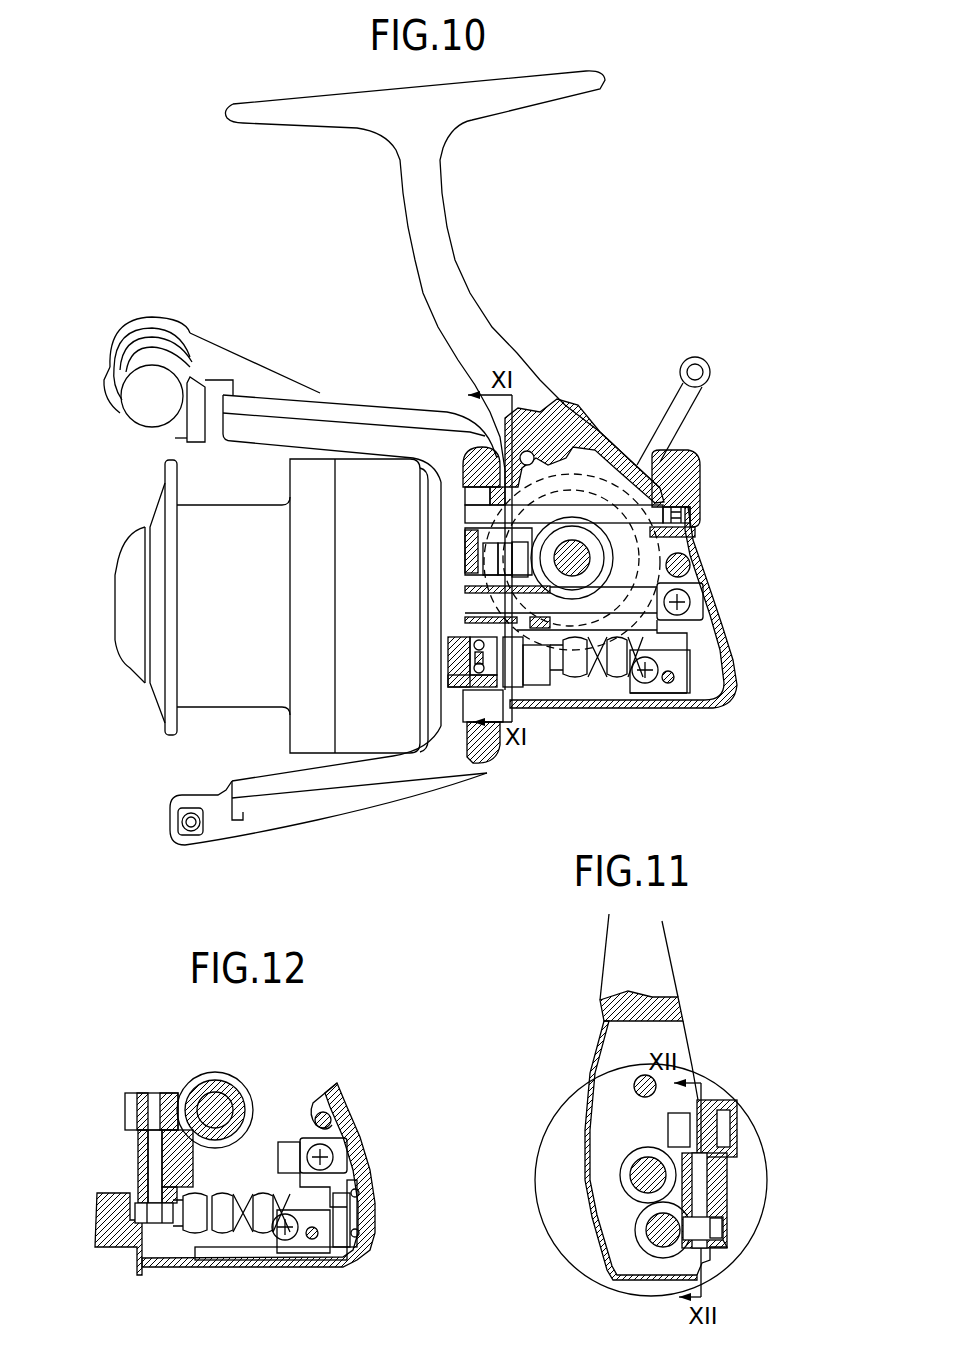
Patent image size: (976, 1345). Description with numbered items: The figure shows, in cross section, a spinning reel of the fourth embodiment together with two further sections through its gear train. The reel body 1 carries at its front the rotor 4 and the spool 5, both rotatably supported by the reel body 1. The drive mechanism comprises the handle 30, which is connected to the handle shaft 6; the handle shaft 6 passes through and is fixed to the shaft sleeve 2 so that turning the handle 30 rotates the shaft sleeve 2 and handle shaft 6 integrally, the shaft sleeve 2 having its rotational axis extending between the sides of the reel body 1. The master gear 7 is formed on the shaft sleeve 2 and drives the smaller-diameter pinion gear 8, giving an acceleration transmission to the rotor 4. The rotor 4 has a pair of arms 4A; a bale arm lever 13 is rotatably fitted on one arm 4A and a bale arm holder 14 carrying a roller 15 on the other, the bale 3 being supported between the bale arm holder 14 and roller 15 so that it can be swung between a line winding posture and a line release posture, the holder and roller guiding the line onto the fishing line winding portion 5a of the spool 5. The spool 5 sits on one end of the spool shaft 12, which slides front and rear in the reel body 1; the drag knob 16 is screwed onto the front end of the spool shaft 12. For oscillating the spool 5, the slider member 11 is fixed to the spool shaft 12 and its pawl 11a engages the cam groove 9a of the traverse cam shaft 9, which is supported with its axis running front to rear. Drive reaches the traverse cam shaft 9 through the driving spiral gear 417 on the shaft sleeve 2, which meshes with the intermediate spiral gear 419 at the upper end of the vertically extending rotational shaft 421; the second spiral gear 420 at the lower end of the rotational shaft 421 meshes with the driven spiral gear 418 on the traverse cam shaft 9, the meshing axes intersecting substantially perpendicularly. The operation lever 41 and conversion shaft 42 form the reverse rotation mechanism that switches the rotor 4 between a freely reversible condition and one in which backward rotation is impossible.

In FIG. 10, the reel body 1 is at (714, 547).
In FIG. 12, the reel body 1 is at (372, 1161).
In FIG. 10, the shaft sleeve 2 is at (575, 553).
In FIG. 12, the shaft sleeve 2 is at (228, 1103).
In FIG. 10, the bale 3 is at (190, 427).
In FIG. 10, the rotor 4 is at (446, 799).
In FIG. 10, the arm 4A is at (350, 425).
In FIG. 10, the spool 5 is at (155, 746).
In FIG. 10, the fishing line winding portion 5a is at (227, 708).
In FIG. 10, the handle shaft 6 is at (573, 555).
In FIG. 12, the handle shaft 6 is at (215, 1108).
In FIG. 10, the master gear 7 is at (557, 415).
In FIG. 10, the pinion gear 8 is at (464, 735).
In FIG. 11, the pinion gear 8 is at (643, 1155).
In FIG. 10, the traverse cam shaft 9 is at (556, 665).
In FIG. 11, the traverse cam shaft 9 is at (640, 1238).
In FIG. 12, the traverse cam shaft 9 is at (224, 1226).
In FIG. 10, the cam groove 9a is at (605, 673).
In FIG. 12, the cam groove 9a is at (248, 1235).
In FIG. 10, the slider member 11 is at (700, 604).
In FIG. 12, the slider member 11 is at (342, 1150).
In FIG. 10, the pawl 11a is at (677, 708).
In FIG. 12, the pawl 11a is at (327, 1272).
In FIG. 10, the spool shaft 12 is at (691, 568).
In FIG. 11, the spool shaft 12 is at (637, 1182).
In FIG. 12, the spool shaft 12 is at (290, 1155).
In FIG. 10, the bale arm lever 13 is at (195, 347).
In FIG. 10, the bale arm holder 14 is at (256, 835).
In FIG. 10, the roller 15 is at (148, 347).
In FIG. 10, the drag knob 16 is at (115, 577).
In FIG. 10, the handle 30 is at (683, 358).
In FIG. 10, the operation lever 41 is at (683, 452).
In FIG. 10, the conversion shaft 42 is at (702, 490).
In FIG. 11, the conversion shaft 42 is at (635, 1082).
In FIG. 10, the driving spiral gear 417 is at (598, 540).
In FIG. 12, the driving spiral gear 417 is at (233, 1097).
In FIG. 10, the driven spiral gear 418 is at (521, 685).
In FIG. 11, the driven spiral gear 418 is at (665, 1257).
In FIG. 10, the intermediate spiral gear 419 is at (466, 598).
In FIG. 11, the intermediate spiral gear 419 is at (722, 1128).
In FIG. 12, the intermediate spiral gear 419 is at (131, 1093).
In FIG. 11, the second spiral gear 420 is at (721, 1231).
In FIG. 12, the second spiral gear 420 is at (142, 1213).
In FIG. 11, the rotational shaft 421 is at (704, 1200).
In FIG. 12, the rotational shaft 421 is at (152, 1177).